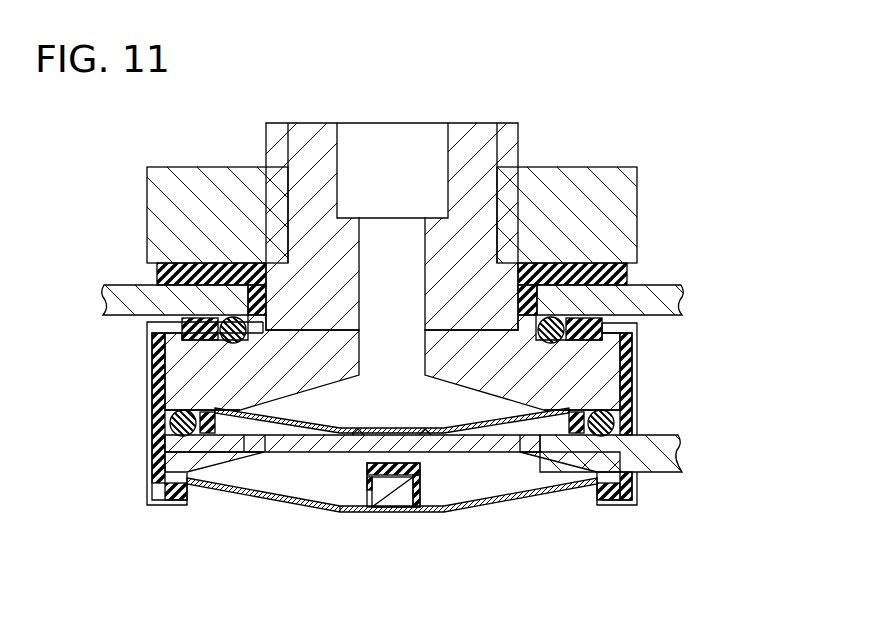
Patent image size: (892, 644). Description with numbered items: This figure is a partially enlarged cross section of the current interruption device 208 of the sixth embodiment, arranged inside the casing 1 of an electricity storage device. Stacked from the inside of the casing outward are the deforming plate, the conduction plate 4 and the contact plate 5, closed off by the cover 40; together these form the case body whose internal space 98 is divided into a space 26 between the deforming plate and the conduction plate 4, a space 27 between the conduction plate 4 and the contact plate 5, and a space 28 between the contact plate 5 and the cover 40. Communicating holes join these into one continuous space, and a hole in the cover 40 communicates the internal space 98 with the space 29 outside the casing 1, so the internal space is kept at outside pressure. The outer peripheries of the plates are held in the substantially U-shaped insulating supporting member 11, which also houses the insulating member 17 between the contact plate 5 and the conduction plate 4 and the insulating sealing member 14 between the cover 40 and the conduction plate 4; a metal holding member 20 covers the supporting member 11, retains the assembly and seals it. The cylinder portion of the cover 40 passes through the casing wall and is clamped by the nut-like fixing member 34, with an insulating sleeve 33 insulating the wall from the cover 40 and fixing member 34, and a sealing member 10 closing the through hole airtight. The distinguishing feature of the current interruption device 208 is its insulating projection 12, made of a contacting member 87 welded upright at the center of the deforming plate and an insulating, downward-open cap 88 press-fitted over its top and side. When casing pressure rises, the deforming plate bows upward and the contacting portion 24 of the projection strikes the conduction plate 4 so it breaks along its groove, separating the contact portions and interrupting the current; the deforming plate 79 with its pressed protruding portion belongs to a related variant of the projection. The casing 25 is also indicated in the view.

The current interruption device 208 is at (668, 137).
The space outside the casing 29 is at (124, 155).
The fixing member 34 is at (538, 165).
The cover 40 is at (302, 140).
The insulating sleeve 33 is at (157, 272).
The casing 1 is at (672, 310).
The holding member 20 is at (643, 367).
The sealing member 10 is at (577, 360).
The insulating member 17 is at (604, 424).
The space 27 is at (230, 425).
The conduction plate 4 is at (318, 444).
The contact plate 5 is at (262, 449).
The sealing member 14 is at (625, 453).
The space 28 is at (374, 373).
The space 26 is at (227, 476).
The deforming plate 79 is at (328, 504).
The internal space 98 is at (60, 357).
The casing 25 is at (118, 516).
The supporting member 11 is at (631, 393).
The contacting portion 24 is at (368, 460).
The contacting member 87 is at (393, 489).
The cap 88 is at (424, 494).
The insulating projection 12 is at (425, 468).